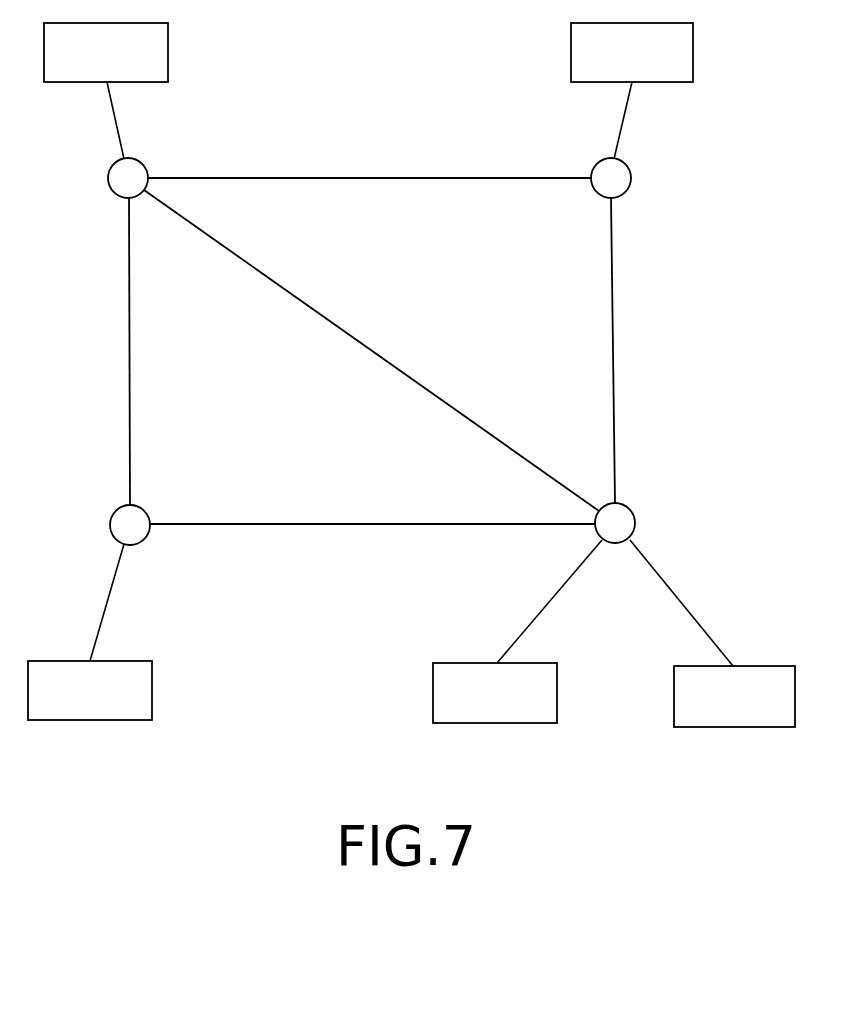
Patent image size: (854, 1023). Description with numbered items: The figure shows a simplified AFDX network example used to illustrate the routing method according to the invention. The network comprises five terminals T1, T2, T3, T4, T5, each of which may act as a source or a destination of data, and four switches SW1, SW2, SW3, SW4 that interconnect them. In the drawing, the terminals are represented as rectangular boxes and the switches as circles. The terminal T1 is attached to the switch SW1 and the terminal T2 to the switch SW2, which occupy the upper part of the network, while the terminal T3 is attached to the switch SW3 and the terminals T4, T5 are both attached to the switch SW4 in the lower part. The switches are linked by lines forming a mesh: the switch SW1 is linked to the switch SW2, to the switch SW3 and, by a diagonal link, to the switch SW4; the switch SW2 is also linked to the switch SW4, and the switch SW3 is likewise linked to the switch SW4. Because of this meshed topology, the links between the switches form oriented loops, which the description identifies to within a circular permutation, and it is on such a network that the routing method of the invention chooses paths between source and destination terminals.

The terminal T1 is at (106, 91).
The terminal T2 is at (632, 91).
The terminal T3 is at (90, 632).
The terminal T4 is at (517, 631).
The terminal T5 is at (712, 633).
The switch SW1 is at (99, 178).
The switch SW2 is at (645, 178).
The switch SW3 is at (101, 525).
The switch SW4 is at (650, 523).